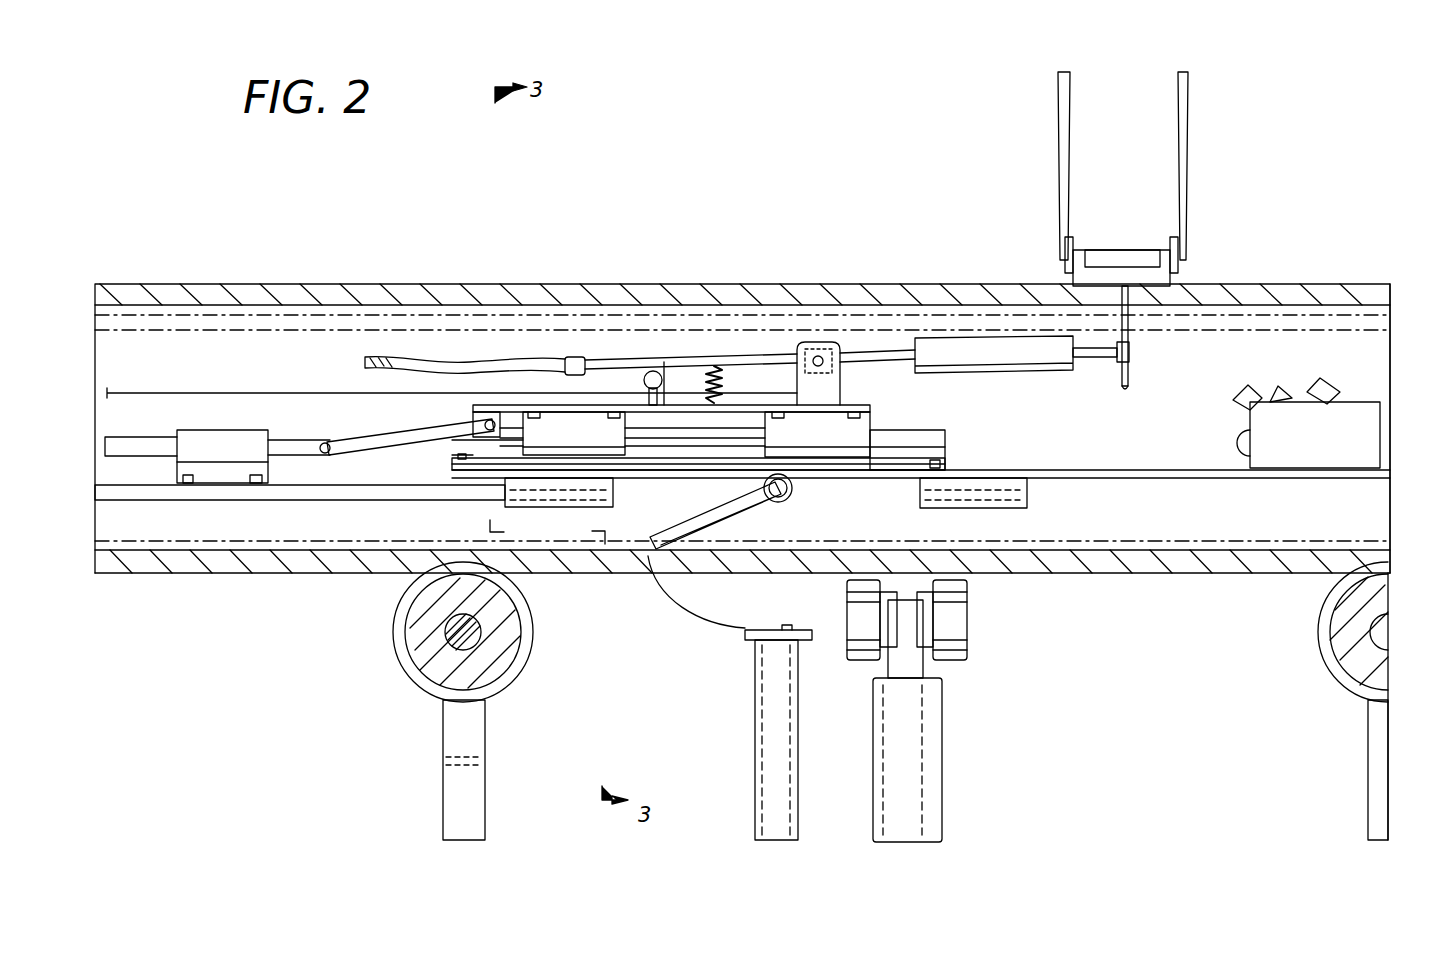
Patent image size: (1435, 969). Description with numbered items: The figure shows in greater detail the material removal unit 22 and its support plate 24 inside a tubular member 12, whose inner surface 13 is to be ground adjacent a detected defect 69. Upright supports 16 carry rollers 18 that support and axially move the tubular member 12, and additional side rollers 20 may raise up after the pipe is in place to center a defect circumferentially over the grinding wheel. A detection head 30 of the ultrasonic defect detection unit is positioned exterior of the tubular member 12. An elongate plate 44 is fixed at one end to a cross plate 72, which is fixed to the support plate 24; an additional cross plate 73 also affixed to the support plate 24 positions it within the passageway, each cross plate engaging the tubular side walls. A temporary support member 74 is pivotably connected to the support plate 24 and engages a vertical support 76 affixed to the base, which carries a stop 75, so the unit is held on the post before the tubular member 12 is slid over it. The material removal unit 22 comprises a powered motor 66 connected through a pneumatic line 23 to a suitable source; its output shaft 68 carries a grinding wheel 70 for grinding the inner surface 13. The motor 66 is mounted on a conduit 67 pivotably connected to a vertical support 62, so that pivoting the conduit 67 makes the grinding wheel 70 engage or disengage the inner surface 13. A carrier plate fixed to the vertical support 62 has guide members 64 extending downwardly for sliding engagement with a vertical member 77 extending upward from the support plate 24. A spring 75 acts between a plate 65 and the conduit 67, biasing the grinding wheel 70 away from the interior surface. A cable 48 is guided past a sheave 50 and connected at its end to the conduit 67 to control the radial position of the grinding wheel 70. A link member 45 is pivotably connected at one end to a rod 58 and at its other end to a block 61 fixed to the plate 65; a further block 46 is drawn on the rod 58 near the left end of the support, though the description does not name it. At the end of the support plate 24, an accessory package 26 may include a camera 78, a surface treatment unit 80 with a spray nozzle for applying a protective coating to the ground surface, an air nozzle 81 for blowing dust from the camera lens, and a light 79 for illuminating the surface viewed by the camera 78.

The tubular member 12 is at (686, 297).
The inner surface 13 is at (856, 298).
The material removal unit 22 is at (956, 328).
The accessory package 26 is at (1313, 345).
The detection head 30 is at (1160, 272).
The detected defect 69 is at (1124, 300).
The grinding wheel 70 is at (1133, 380).
The plate 65 is at (527, 405).
The pneumatic line 23 is at (542, 367).
The conduit 67 is at (748, 360).
The cable 48 is at (170, 392).
The sheave 50 is at (641, 383).
The spring 75 is at (727, 390).
The vertical support 62 is at (842, 380).
The block 61 is at (470, 416).
The guide members 64 is at (870, 437).
The vertical member 77 is at (945, 432).
The support plate 24 is at (1042, 470).
The elongate plate 44 is at (338, 490).
The cross plate 72 is at (612, 490).
The cross plate 73 is at (1023, 502).
The temporary support member 74 is at (742, 510).
The rod 58 is at (140, 440).
The slide block 46 is at (240, 430).
The link member 45 is at (390, 438).
The powered motor 66 is at (1040, 365).
The output shaft 68 is at (1100, 358).
The surface treatment unit 80 is at (1320, 392).
The light 79 is at (1240, 445).
The camera 78 is at (1243, 392).
The air nozzle 81 is at (1282, 390).
The rollers 18 is at (508, 640).
The upright support 16 is at (485, 758).
The vertical support 76 is at (757, 734).
The side rollers 20 is at (960, 626).